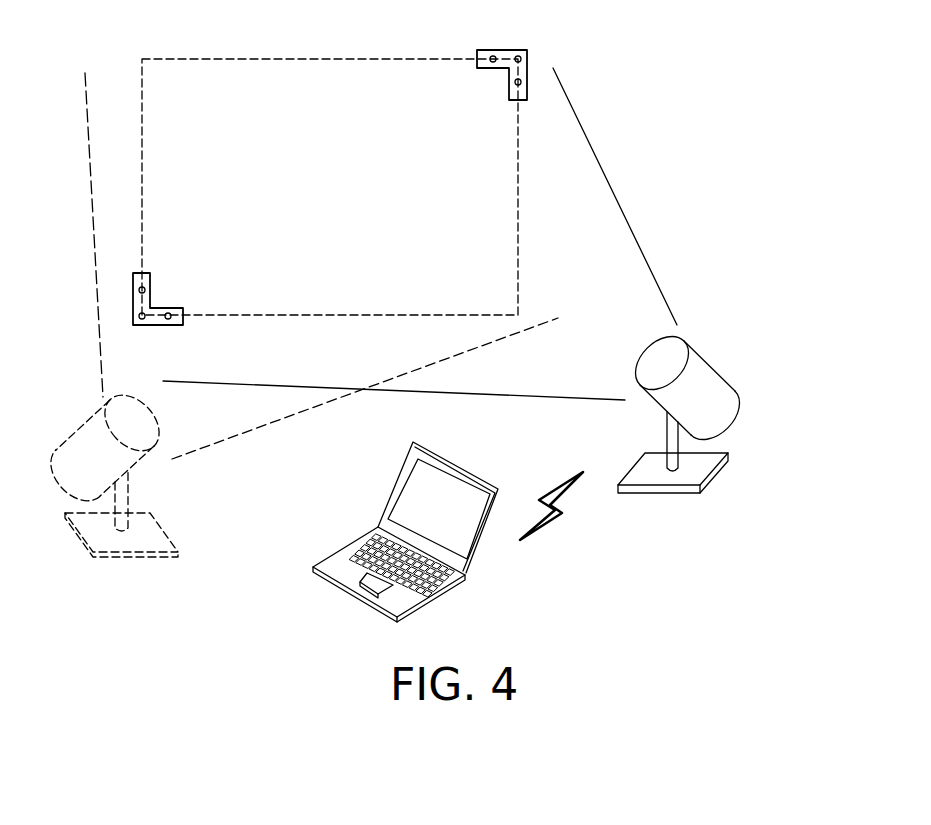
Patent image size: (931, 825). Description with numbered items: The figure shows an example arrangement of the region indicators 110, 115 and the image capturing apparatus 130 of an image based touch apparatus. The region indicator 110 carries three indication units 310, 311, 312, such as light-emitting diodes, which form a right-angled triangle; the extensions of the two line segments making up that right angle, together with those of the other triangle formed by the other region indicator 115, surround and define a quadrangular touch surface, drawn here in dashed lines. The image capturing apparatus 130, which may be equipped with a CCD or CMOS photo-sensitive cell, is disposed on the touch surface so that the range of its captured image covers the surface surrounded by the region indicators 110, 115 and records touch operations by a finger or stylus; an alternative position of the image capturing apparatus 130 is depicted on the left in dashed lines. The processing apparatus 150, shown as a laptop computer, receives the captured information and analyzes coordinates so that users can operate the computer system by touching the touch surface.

The region indicator 110 is at (150, 326).
The region indicator 115 is at (500, 49).
The image capturing apparatus 130 is at (122, 557).
The processing apparatus 150 is at (438, 593).
The indication unit 310 is at (146, 289).
The indication unit 311 is at (142, 320).
The indication unit 312 is at (171, 313).